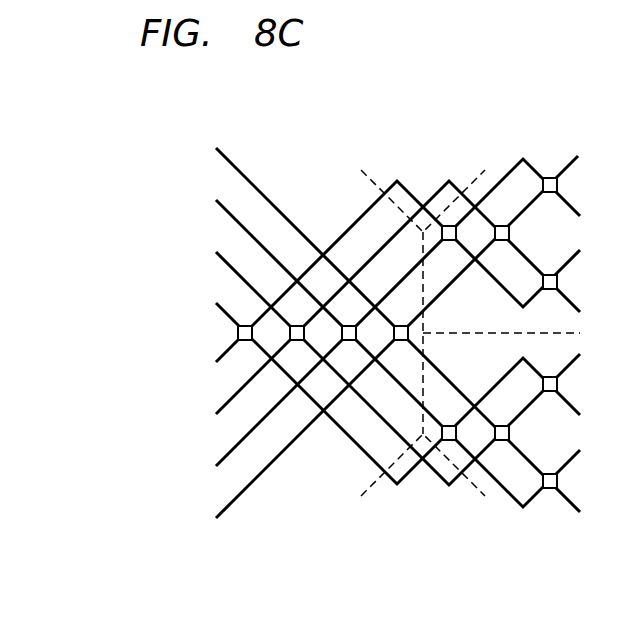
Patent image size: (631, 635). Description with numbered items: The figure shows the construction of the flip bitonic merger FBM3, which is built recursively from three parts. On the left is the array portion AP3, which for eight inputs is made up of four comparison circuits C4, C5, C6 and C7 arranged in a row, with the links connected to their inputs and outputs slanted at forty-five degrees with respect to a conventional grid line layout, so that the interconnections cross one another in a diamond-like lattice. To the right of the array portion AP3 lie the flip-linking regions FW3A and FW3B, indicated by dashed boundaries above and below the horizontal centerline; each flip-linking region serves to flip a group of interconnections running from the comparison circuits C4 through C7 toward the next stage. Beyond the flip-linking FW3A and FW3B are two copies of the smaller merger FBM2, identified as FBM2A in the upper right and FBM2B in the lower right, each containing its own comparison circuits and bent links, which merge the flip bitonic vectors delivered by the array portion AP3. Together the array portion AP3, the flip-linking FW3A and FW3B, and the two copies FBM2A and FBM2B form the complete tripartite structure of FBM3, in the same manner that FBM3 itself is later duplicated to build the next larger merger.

The array portion AP3 is at (187, 235).
The flip bitonic merger FBM3 is at (134, 327).
The comparison circuit C4 is at (238, 332).
The comparison circuit C5 is at (290, 340).
The comparison circuit C6 is at (347, 341).
The comparison circuit C7 is at (409, 331).
The flip-linking FW3A is at (425, 168).
The flip-linking FW3B is at (421, 497).
The first copy of FBM2 FBM2A is at (555, 160).
The second copy of FBM2 FBM2B is at (551, 517).